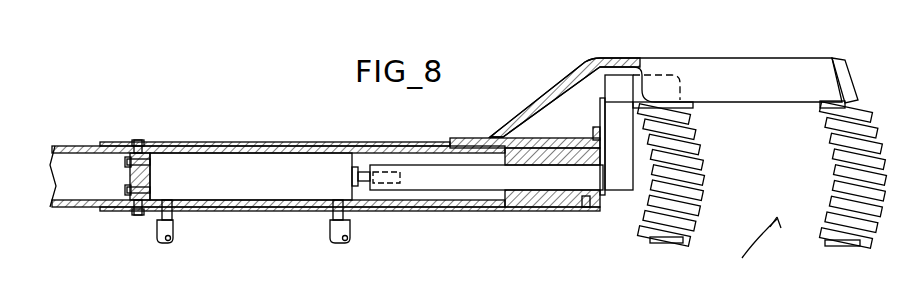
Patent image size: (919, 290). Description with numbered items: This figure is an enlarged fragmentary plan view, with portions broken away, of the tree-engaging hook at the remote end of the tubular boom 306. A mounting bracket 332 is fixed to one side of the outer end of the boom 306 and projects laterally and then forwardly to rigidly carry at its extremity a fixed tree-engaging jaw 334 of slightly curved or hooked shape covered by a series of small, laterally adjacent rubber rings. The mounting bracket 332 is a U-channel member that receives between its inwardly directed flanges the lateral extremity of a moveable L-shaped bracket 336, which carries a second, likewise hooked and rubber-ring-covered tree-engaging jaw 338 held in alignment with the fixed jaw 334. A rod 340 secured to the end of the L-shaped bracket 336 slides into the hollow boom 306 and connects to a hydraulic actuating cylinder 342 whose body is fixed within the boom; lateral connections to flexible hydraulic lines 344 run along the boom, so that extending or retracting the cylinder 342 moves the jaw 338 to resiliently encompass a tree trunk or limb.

The tubular boom 306 is at (375, 145).
The mounting bracket 332 is at (786, 66).
The fixed tree-engaging jaw 334 is at (746, 248).
The moveable L-shaped bracket 336 is at (617, 88).
The moveable tree-engaging jaw 338 is at (648, 219).
The rod 340 is at (480, 180).
The hydraulic actuating cylinder 342 is at (254, 187).
The flexible hydraulic lines 344 is at (330, 232).